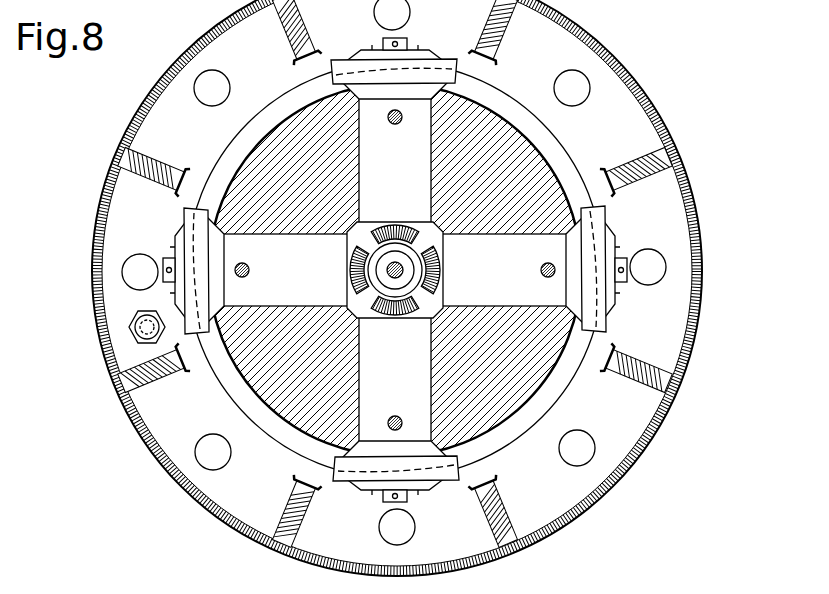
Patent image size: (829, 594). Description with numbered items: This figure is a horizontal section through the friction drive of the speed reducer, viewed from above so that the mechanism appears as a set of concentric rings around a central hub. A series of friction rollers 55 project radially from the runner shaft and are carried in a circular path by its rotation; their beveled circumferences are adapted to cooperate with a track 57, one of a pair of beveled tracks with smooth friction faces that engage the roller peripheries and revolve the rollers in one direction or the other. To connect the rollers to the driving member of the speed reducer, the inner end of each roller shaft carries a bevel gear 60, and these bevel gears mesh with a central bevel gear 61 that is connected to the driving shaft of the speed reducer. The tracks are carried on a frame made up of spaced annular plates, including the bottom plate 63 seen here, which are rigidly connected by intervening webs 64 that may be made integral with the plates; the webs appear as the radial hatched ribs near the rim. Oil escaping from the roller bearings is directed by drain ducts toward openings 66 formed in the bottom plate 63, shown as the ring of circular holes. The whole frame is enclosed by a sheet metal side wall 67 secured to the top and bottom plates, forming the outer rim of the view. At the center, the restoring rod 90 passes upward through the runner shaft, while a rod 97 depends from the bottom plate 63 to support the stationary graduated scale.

The friction rollers 55 is at (433, 62).
The track 57 is at (292, 452).
The bevel gear 60 is at (421, 228).
The bevel gear 61 is at (443, 226).
The bottom plate 63 is at (532, 468).
The webs 64 is at (497, 48).
The openings 66 is at (374, 12).
The sheet metal side wall 67 is at (702, 252).
The restoring rod 90 is at (403, 267).
The rod 97 is at (133, 331).